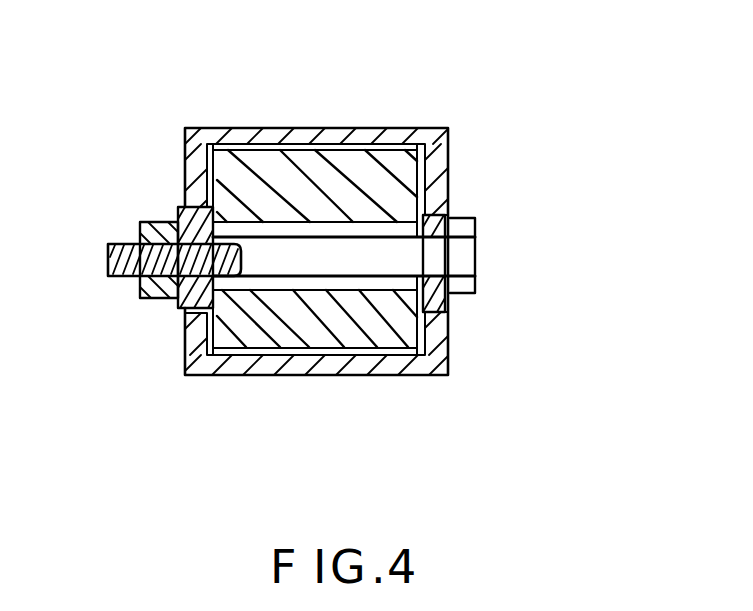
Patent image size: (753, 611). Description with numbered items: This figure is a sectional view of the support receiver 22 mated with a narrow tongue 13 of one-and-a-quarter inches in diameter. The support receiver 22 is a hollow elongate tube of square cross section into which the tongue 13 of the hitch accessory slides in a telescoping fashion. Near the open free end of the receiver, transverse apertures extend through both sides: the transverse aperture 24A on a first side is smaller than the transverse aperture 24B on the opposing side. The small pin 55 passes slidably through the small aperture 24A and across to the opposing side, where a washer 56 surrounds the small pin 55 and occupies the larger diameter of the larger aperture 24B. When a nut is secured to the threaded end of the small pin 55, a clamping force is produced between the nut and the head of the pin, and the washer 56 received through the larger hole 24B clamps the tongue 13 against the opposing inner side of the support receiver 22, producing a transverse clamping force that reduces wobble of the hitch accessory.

The tongue 13 is at (297, 188).
The support receiver 22 is at (372, 128).
The transverse aperture 24A is at (453, 222).
The transverse aperture 24B is at (185, 205).
The small pin 55 is at (463, 257).
The washer 56 is at (180, 209).